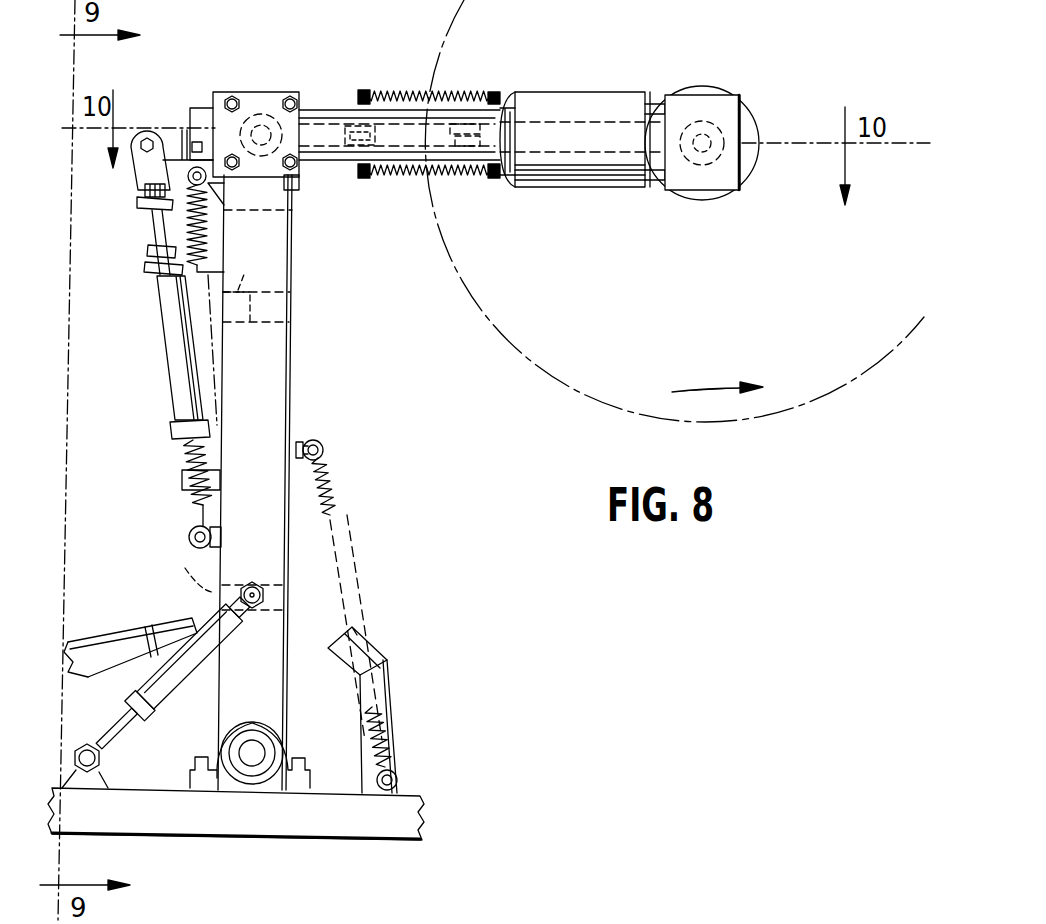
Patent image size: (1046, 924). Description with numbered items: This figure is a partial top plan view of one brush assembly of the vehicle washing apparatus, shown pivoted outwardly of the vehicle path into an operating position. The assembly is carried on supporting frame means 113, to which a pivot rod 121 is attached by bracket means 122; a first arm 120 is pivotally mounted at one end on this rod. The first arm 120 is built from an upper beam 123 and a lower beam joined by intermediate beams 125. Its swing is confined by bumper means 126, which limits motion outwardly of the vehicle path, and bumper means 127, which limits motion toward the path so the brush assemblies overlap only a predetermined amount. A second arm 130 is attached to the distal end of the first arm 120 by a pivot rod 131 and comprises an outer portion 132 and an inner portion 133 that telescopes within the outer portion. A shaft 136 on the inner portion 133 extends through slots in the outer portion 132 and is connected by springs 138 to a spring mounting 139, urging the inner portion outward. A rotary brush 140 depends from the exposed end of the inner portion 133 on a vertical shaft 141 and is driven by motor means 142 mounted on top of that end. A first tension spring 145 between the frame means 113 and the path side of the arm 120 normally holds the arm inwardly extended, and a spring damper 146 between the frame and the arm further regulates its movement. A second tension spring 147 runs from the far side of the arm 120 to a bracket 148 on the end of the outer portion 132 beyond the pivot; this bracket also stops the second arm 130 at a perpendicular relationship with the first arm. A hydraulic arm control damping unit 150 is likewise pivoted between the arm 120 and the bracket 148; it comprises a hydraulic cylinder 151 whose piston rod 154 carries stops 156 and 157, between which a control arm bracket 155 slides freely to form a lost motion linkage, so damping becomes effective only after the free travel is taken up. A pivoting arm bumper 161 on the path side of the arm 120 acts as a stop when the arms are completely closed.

The supporting frame means 113 is at (305, 820).
The first arm 120 is at (310, 370).
The pivot rod 121 is at (255, 752).
The bracket means 122 is at (232, 748).
The upper beam 123 is at (283, 418).
The intermediate beams 125 is at (250, 269).
The bumper means 126 is at (175, 624).
The bumper means 127 is at (340, 640).
The second arm 130 is at (312, 188).
The pivot rod 131 is at (261, 95).
The outer portion 132 is at (325, 108).
The inner portion 133 is at (587, 105).
The shaft 136 is at (364, 90).
The springs 138 is at (410, 92).
The spring mounting 139 is at (494, 92).
The rotary brush 140 is at (550, 355).
The vertical shaft 141 is at (702, 135).
The motor means 142 is at (604, 190).
The first tension spring 145 is at (338, 495).
The spring damper 146 is at (158, 685).
The second tension spring 147 is at (207, 240).
The bracket 148 is at (183, 150).
The hydraulic arm control damping unit 150 is at (148, 363).
The hydraulic cylinder 151 is at (170, 350).
The piston rod 154 is at (152, 232).
The control arm bracket 155 is at (138, 205).
The stop 156 is at (142, 190).
The stop 157 is at (152, 252).
The pivoting arm bumper 161 is at (283, 312).